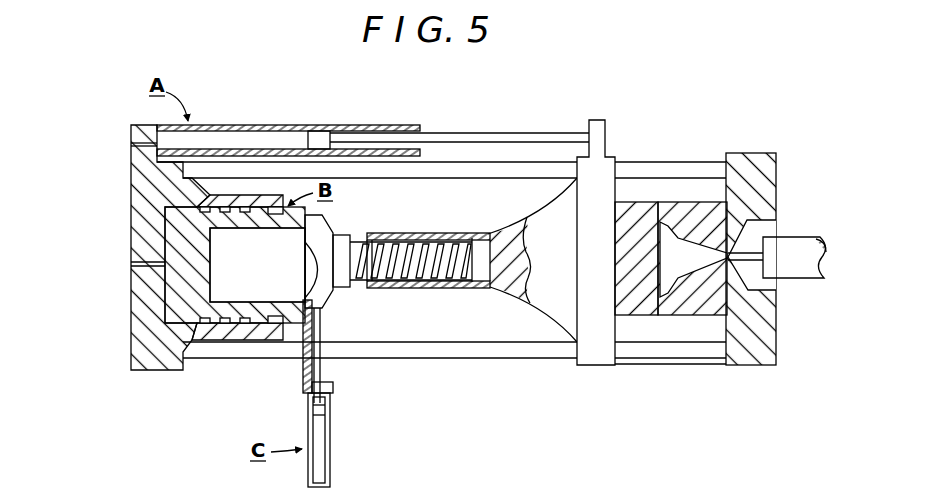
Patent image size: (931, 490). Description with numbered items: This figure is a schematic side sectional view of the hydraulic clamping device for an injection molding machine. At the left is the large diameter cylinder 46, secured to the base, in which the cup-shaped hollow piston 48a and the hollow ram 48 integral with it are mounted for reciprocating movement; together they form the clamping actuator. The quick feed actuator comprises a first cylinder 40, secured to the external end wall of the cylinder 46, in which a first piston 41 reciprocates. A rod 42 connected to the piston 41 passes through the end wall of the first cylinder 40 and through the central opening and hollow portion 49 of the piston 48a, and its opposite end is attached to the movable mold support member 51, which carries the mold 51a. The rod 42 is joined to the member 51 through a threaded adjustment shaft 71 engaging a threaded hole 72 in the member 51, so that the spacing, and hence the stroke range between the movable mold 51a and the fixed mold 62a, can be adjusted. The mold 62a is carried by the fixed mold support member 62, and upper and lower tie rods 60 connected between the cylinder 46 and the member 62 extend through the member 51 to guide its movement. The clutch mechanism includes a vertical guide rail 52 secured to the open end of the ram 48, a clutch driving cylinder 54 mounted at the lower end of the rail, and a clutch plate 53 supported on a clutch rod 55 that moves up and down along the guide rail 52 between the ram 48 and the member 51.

The first cylinder 40 is at (244, 125).
The first piston 41 is at (320, 130).
The rod 42 is at (504, 133).
The large diameter cylinder 46 is at (142, 325).
The hollow ram 48 is at (292, 310).
The cup-shaped hollow piston 48a is at (212, 282).
The hollow portion 49 is at (212, 246).
The mold support member 51 is at (603, 362).
The mold 51a is at (628, 205).
The vertical guide rail 52 is at (303, 381).
The clutch plate 53 is at (328, 292).
The clutch driving cylinder 54 is at (330, 442).
The clutch rod 55 is at (322, 377).
The tie rods 60 is at (487, 170).
The mold support member 62 is at (774, 330).
The mold 62a is at (706, 212).
The threaded adjustment shaft 71 is at (410, 242).
The threaded hole 72 is at (437, 240).